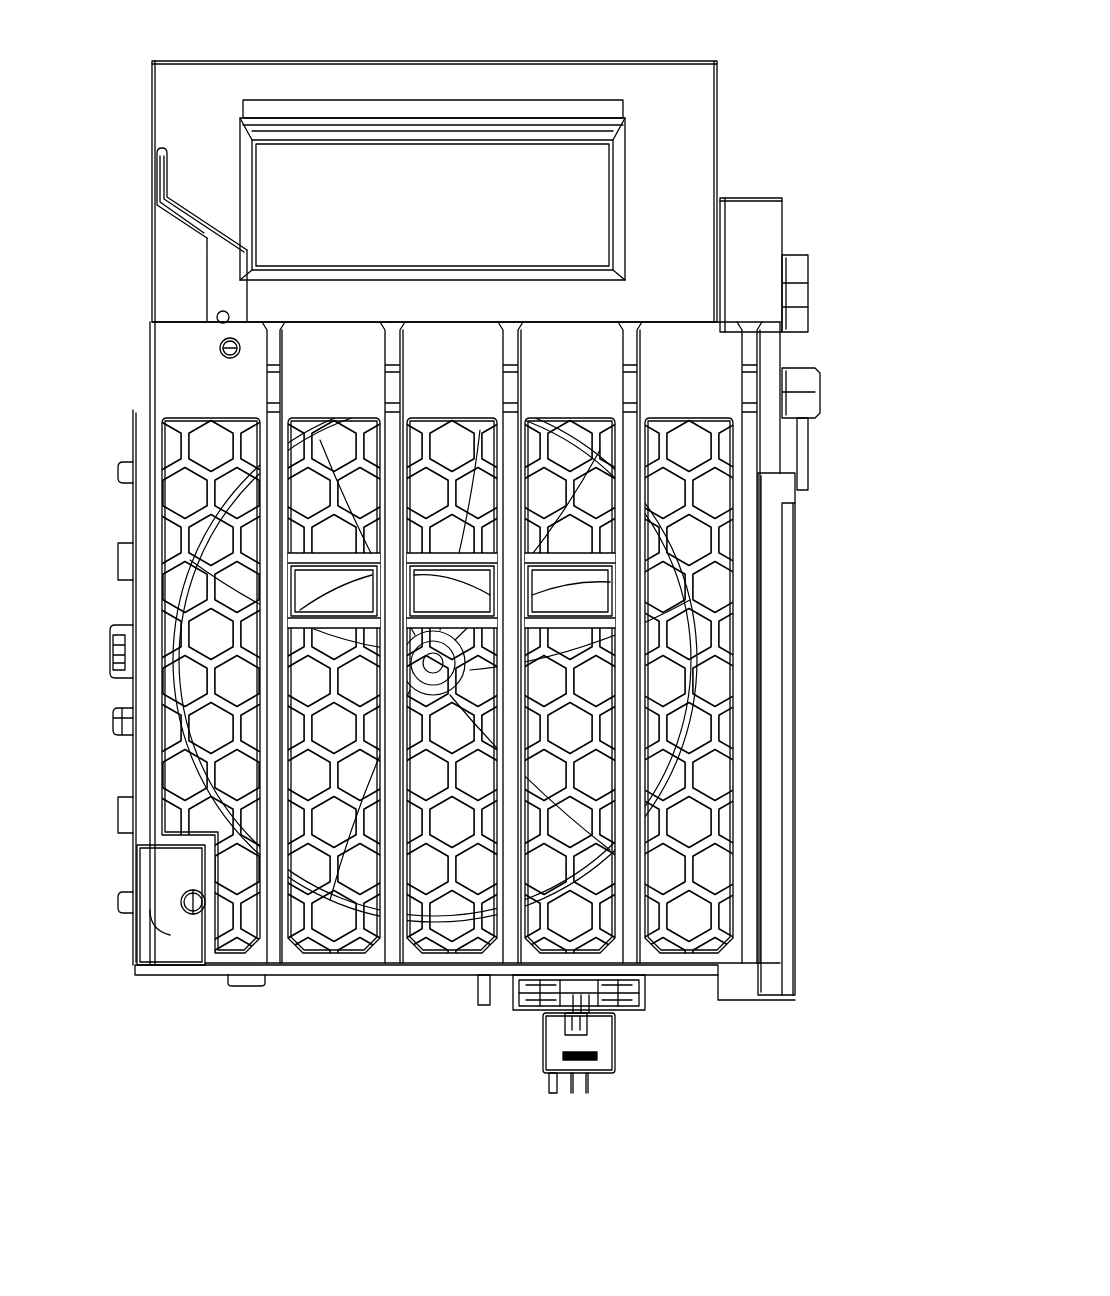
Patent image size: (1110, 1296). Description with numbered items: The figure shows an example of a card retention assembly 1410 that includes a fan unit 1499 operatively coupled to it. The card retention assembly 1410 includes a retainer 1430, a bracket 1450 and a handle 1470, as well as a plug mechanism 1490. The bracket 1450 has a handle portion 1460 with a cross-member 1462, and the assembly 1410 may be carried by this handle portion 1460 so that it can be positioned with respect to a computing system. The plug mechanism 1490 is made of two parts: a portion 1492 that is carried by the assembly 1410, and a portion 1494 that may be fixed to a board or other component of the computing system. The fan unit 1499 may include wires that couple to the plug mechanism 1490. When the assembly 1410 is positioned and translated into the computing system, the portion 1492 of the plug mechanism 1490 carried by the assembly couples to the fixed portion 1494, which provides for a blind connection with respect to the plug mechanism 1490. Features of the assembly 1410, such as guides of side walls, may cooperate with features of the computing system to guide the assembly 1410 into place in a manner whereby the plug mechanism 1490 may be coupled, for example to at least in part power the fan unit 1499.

The card retention assembly 1410 is at (668, 46).
The bracket 1450 is at (693, 271).
The handle portion 1460 is at (460, 95).
The cross-member 1462 is at (396, 133).
The handle 1470 is at (155, 168).
The retainer 1430 is at (800, 368).
The fan unit 1499 is at (240, 492).
The plug mechanism 1490 is at (477, 1035).
The portion of plug mechanism carried by the assembly 1492 is at (632, 1006).
The portion of plug mechanism fixed to a board 1494 is at (607, 1046).